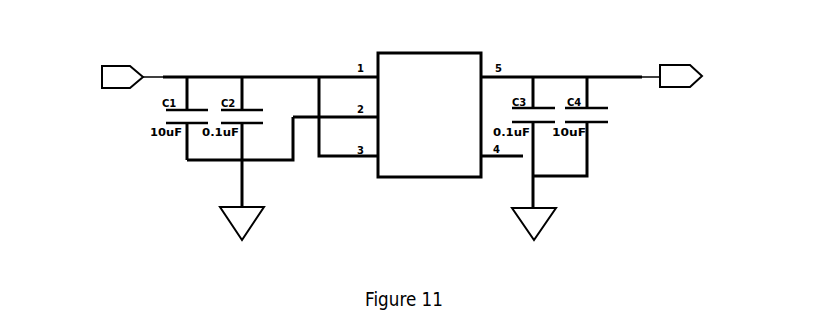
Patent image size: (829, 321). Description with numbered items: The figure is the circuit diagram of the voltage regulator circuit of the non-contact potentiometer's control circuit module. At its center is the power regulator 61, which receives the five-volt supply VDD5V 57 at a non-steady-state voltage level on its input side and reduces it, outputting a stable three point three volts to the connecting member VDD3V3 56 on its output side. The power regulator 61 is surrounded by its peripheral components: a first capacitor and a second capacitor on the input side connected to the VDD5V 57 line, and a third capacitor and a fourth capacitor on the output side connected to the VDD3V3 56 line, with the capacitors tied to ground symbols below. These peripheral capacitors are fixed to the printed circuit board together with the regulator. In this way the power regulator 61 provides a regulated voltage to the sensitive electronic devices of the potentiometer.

The VDD5V 57 is at (113, 64).
The power regulator 61 is at (450, 53).
The VDD3V3 56 is at (672, 65).